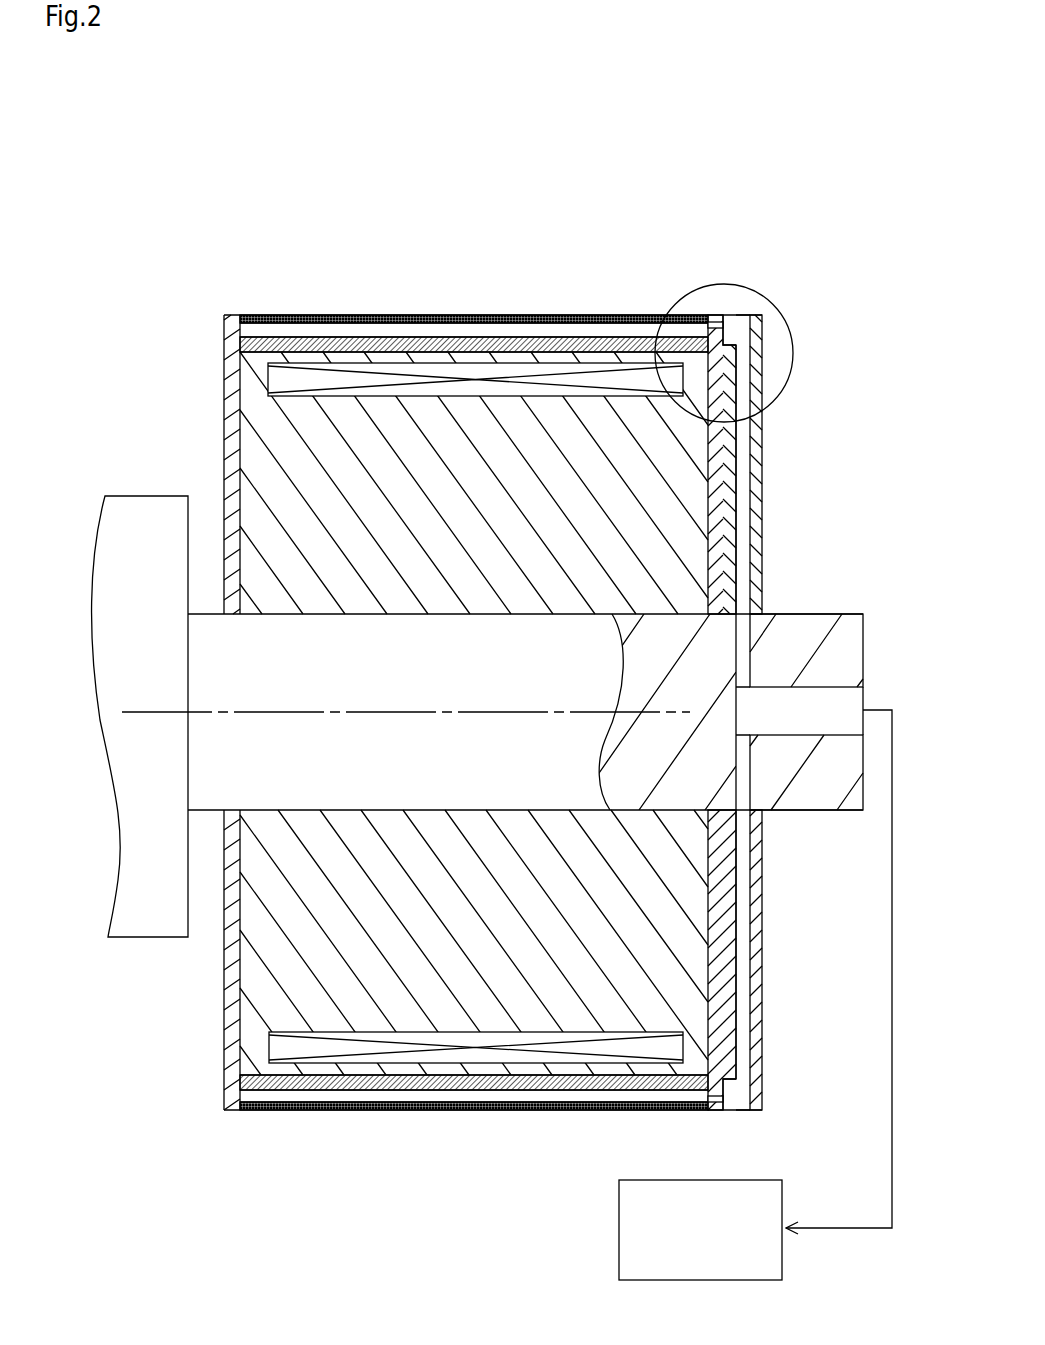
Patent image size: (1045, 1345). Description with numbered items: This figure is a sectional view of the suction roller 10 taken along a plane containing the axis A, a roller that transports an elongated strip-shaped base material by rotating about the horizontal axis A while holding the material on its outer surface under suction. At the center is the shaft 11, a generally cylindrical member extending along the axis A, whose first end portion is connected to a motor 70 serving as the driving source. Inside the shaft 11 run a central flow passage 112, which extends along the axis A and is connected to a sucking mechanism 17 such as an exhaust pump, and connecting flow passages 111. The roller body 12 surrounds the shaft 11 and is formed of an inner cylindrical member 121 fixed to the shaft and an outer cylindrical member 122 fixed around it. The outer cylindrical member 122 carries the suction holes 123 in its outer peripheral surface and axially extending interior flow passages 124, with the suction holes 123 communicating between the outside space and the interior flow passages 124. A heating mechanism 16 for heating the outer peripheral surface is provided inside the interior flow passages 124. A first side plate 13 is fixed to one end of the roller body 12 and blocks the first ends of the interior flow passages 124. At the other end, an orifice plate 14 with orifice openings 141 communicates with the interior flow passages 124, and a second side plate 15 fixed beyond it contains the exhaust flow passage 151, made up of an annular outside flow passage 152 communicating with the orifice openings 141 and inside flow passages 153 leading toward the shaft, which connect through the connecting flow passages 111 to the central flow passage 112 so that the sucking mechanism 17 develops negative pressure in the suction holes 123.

The suction roller 10 is at (371, 238).
The shaft 11 is at (226, 780).
The roller body 12 is at (474, 644).
The first side plate 13 is at (236, 413).
The orifice plate 14 is at (779, 678).
The second side plate 15 is at (755, 529).
The heating mechanism 16 is at (328, 378).
The sucking mechanism 17 is at (618, 1203).
The motor 70 is at (145, 522).
The connecting flow passage 111 is at (748, 637).
The central flow passage 112 is at (807, 718).
The inner cylindrical member 121 is at (455, 447).
The outer cylindrical member 122 is at (523, 338).
The suction hole 123 is at (614, 314).
The interior flow passage 124 is at (677, 329).
The orifice opening 141 is at (726, 327).
The exhaust flow passage 151 is at (795, 697).
The outside flow passage 152 is at (735, 340).
The inside flow passage 153 is at (745, 440).
The axis A is at (346, 705).